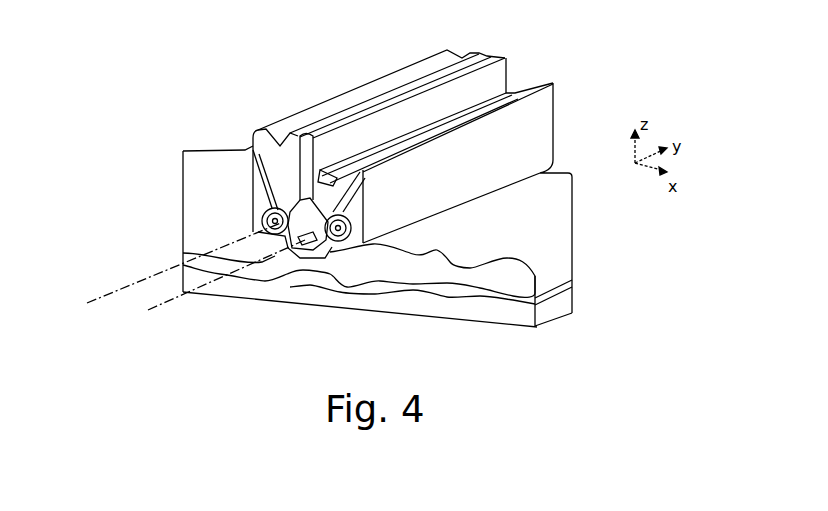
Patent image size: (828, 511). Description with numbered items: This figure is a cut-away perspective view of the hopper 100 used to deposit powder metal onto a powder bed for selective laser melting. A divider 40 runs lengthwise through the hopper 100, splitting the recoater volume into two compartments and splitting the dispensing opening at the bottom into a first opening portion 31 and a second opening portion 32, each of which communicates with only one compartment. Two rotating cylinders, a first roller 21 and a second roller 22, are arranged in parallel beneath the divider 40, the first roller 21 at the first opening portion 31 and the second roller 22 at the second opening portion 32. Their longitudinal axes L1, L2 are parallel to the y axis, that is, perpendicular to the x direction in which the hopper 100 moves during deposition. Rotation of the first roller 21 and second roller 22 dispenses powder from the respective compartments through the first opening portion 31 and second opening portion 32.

The hopper 100 is at (578, 52).
The divider 40 is at (363, 127).
The first roller 21 is at (352, 222).
The second roller 22 is at (262, 215).
The first opening portion 31 is at (287, 240).
The second opening portion 32 is at (333, 232).
The longitudinal axis of the first roller L1 is at (155, 308).
The longitudinal axis of the second roller L2 is at (110, 288).